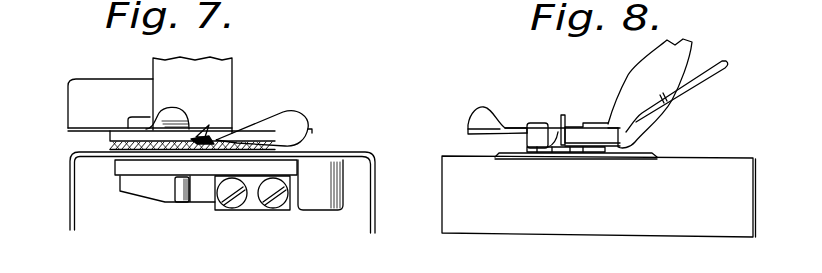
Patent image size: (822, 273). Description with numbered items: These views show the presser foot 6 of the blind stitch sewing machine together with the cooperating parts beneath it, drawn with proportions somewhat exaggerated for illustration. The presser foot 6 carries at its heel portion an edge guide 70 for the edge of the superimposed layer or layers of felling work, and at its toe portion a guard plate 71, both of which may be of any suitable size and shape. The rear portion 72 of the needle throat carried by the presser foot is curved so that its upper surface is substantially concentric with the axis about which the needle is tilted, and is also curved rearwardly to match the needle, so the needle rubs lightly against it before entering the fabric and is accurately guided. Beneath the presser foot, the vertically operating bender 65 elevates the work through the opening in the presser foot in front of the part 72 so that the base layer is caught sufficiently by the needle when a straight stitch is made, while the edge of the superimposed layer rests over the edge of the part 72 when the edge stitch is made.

In FIG. 7, the presser foot 6 is at (220, 86).
In FIG. 8, the presser foot 6 is at (699, 46).
In FIG. 7, the bender 65 is at (180, 203).
In FIG. 7, the edge guide 70 is at (296, 128).
In FIG. 8, the edge guide 70 is at (564, 114).
In FIG. 7, the guard plate 71 is at (68, 128).
In FIG. 8, the guard plate 71 is at (517, 130).
In FIG. 7, the rear portion of the needle throat 72 is at (213, 138).